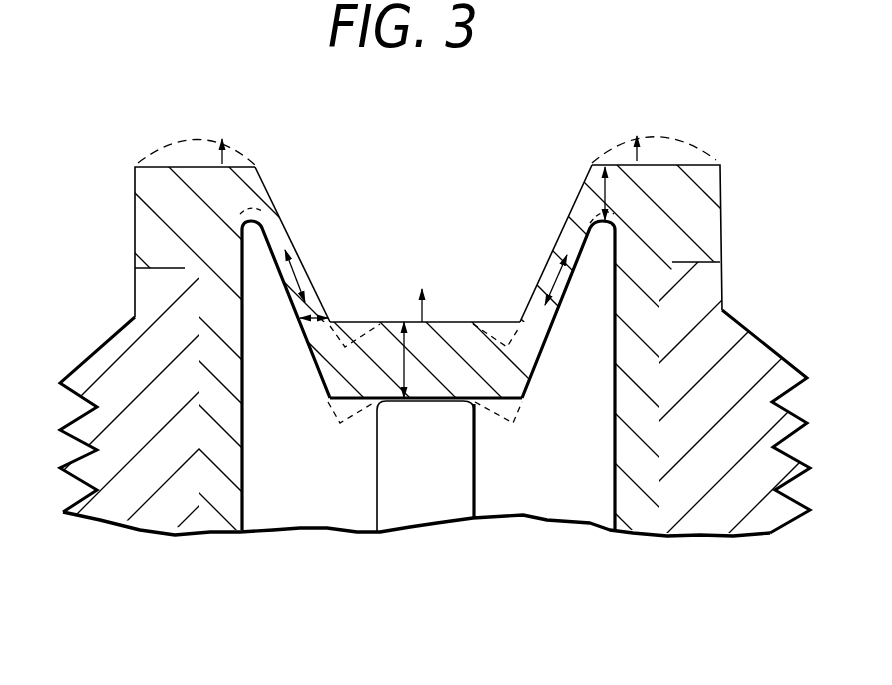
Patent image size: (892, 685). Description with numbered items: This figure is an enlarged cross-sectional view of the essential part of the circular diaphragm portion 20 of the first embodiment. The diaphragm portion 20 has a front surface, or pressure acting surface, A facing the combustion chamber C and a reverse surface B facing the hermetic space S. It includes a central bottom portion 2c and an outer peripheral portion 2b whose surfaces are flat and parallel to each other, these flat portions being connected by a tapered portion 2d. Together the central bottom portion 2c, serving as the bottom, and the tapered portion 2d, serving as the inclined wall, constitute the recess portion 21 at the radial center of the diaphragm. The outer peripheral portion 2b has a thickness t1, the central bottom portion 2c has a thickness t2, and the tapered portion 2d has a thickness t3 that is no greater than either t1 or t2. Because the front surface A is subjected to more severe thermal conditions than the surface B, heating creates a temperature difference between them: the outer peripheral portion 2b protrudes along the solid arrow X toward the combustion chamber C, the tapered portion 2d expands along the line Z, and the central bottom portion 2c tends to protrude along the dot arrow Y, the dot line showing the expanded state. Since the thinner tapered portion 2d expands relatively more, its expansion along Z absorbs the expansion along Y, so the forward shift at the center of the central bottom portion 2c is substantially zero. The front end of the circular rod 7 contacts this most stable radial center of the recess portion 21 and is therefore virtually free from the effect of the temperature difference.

The combustion chamber C is at (453, 116).
The outer peripheral portion 2b is at (183, 164).
The diaphragm portion 20 is at (266, 190).
The tapered portion 2d is at (292, 240).
The central bottom portion 2c is at (352, 322).
The recess portion 21 is at (522, 398).
The circular rod 7 is at (388, 478).
The hermetic space S is at (321, 496).
The solid arrow X is at (226, 160).
The dot arrow Y is at (423, 318).
The solid line Z is at (303, 268).
The thickness of outer peripheral portion t1 is at (600, 192).
The thickness of central bottom portion t2 is at (408, 350).
The thickness of tapered portion t3 is at (312, 322).
The front surface A is at (493, 321).
The reverse surface B is at (543, 357).